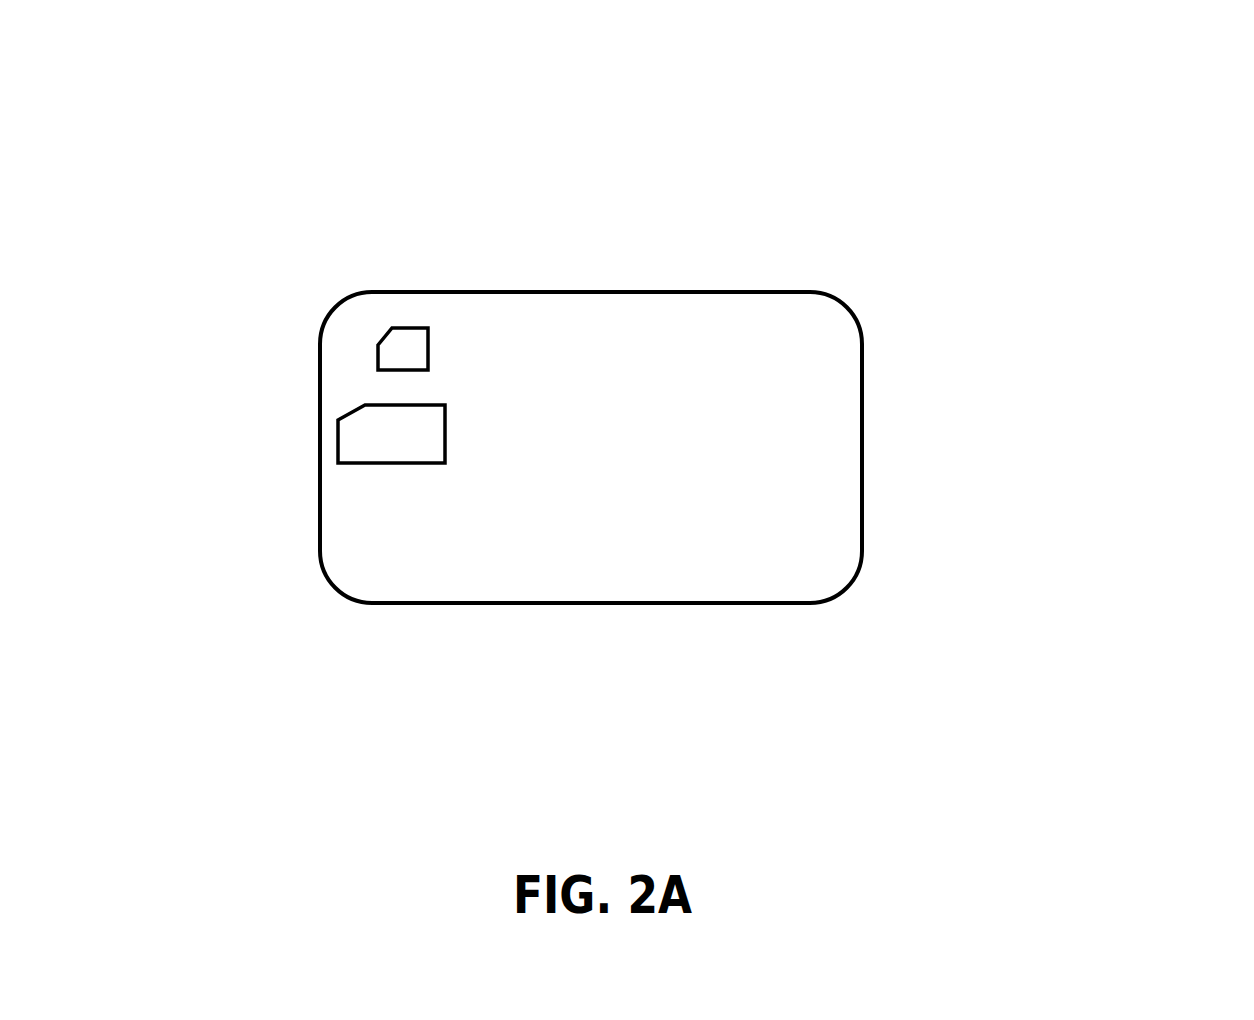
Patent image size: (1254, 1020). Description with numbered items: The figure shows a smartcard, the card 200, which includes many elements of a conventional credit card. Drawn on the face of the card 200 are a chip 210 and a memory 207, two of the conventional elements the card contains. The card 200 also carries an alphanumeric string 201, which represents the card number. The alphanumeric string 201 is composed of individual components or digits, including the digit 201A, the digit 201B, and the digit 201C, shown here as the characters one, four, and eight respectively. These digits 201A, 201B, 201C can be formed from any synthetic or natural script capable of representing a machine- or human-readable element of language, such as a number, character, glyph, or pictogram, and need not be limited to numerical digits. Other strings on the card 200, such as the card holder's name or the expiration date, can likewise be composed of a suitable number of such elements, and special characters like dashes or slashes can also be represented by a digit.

The card 200 is at (715, 312).
The alphanumeric string 201 is at (681, 474).
The digit 201A is at (477, 446).
The digit 201B is at (533, 448).
The digit 201C is at (613, 447).
The memory 207 is at (364, 353).
The chip 210 is at (332, 435).